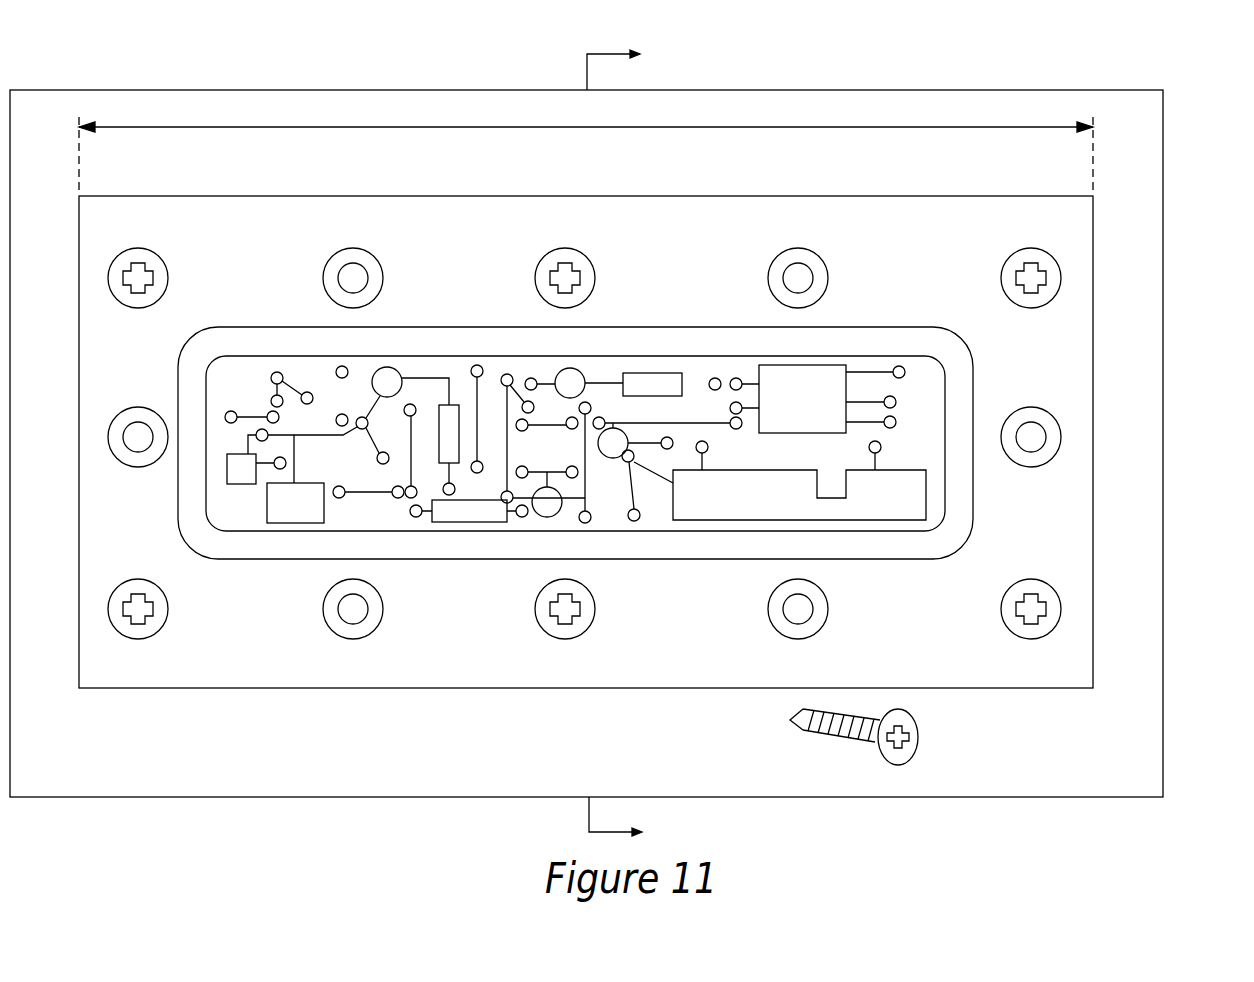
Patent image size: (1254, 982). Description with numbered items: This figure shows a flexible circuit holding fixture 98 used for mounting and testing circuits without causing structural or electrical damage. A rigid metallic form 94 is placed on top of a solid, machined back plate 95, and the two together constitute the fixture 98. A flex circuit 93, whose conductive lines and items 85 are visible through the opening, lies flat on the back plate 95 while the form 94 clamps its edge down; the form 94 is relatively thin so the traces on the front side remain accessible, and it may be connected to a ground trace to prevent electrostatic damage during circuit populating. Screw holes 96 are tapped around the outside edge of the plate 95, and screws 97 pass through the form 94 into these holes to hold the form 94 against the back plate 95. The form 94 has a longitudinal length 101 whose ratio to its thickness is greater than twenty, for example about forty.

The fixture 98 is at (1035, 75).
The back plate 95 is at (1130, 114).
The longitudinal length 101 is at (642, 127).
The metallic form 94 is at (923, 212).
The screw holes 96 is at (797, 278).
The screws 97 is at (1017, 260).
The flex circuit 93 is at (930, 387).
The conductive lines and items 85 is at (608, 507).